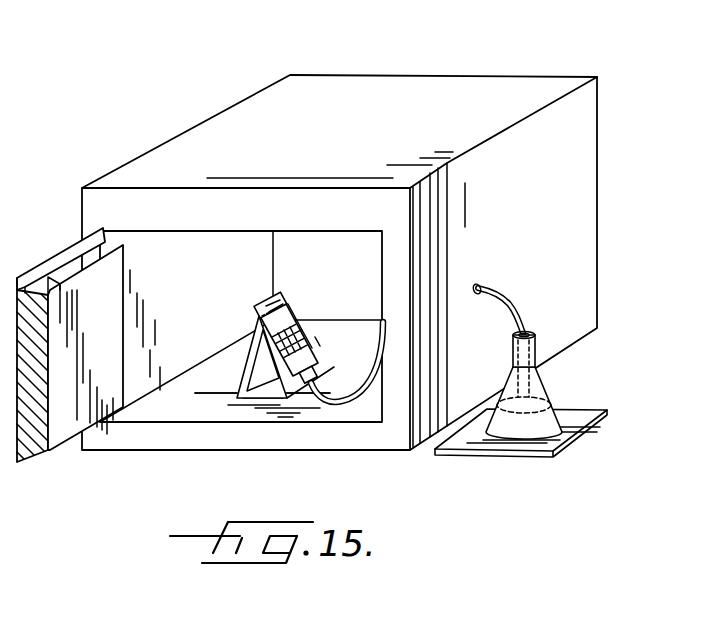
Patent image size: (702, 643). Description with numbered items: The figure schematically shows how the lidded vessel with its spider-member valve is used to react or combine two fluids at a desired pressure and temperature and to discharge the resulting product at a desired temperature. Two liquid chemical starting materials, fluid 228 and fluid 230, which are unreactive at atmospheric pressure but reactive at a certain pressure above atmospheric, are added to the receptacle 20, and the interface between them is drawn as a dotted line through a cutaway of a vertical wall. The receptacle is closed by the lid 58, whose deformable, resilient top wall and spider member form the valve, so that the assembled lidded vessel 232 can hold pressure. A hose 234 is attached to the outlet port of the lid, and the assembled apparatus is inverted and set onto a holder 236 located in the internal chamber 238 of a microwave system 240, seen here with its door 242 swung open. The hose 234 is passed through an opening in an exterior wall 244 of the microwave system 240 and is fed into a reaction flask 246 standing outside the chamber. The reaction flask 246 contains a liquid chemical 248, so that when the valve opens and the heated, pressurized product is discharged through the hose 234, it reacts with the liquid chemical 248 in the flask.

The receptacle 20 is at (266, 319).
The lid 58 is at (316, 340).
The fluid 228 is at (262, 332).
The fluid 230 is at (257, 313).
The lidded vessel 232 is at (307, 312).
The hose 234 is at (343, 402).
The holder 236 is at (247, 368).
The internal chamber 238 is at (233, 377).
The microwave system 240 is at (213, 105).
The door 242 is at (70, 345).
The exterior wall 244 is at (516, 240).
The reaction flask 246 is at (543, 387).
The liquid chemical 248 is at (550, 425).